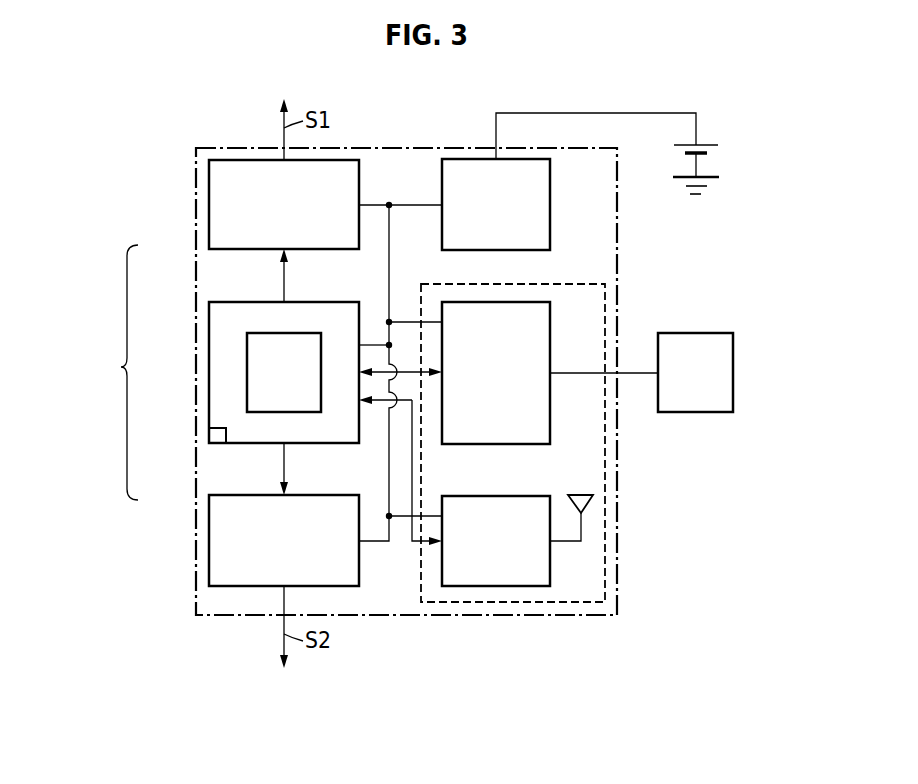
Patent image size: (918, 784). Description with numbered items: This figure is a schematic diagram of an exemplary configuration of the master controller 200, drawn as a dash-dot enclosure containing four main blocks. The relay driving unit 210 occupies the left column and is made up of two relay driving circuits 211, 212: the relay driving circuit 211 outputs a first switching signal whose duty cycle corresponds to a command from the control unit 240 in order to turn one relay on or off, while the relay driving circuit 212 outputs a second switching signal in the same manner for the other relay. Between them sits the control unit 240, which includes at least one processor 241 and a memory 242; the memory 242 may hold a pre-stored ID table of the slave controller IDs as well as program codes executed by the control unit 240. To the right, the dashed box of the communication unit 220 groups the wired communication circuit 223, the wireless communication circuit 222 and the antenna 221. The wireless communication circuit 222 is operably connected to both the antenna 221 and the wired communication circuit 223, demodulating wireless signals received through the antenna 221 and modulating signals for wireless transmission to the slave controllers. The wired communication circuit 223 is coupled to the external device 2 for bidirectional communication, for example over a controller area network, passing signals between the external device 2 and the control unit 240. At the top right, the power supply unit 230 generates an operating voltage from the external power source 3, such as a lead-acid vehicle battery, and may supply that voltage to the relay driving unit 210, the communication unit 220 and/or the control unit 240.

The external device 2 is at (710, 333).
The external power source 3 is at (731, 145).
The master controller 200 is at (243, 148).
The relay driving unit 210 is at (108, 372).
The relay driving circuit 211 is at (209, 234).
The relay driving circuit 212 is at (209, 512).
The communication unit 220 is at (605, 472).
The antenna 221 is at (581, 495).
The wireless communication circuit 222 is at (522, 496).
The wired communication circuit 223 is at (550, 322).
The power supply unit 230 is at (550, 218).
The control unit 240 is at (316, 302).
The processor 241 is at (297, 412).
The memory 242 is at (215, 443).